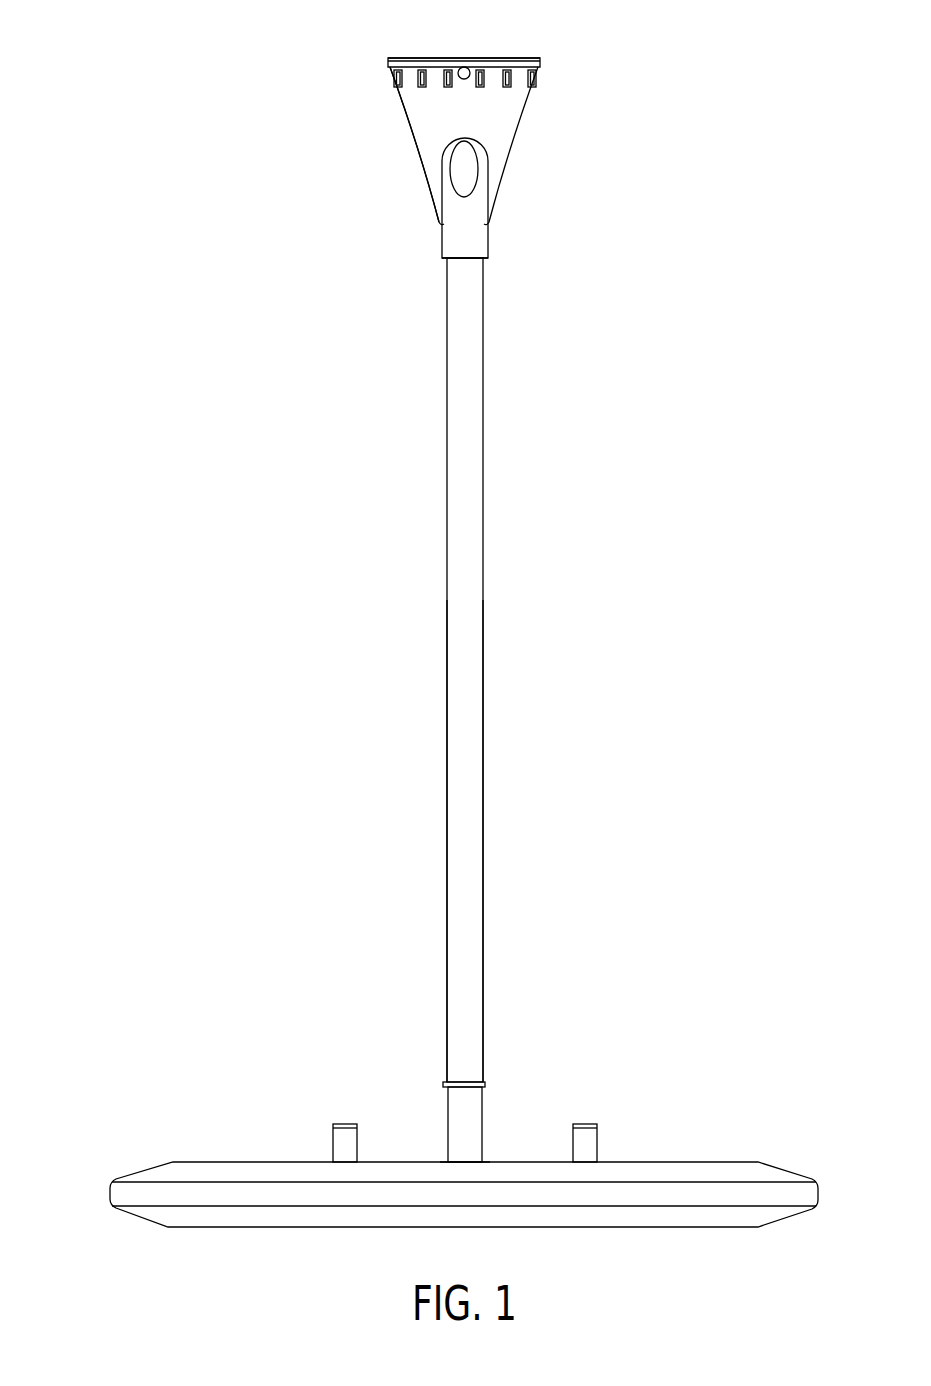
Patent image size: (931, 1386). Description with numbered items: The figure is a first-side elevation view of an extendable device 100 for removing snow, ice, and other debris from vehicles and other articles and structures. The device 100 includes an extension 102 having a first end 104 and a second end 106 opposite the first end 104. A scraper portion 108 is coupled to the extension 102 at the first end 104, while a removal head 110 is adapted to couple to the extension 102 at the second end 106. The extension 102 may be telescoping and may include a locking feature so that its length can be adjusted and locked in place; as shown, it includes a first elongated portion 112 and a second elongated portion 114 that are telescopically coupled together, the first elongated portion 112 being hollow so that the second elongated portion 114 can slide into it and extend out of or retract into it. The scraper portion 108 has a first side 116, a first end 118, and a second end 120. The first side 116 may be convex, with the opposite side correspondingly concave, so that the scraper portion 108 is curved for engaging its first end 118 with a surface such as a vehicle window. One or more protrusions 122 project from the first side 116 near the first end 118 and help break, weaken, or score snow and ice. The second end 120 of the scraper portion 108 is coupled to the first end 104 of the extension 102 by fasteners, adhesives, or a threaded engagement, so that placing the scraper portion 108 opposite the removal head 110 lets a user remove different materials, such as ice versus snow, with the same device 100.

The extendable device 100 is at (302, 506).
The extension 102 is at (513, 641).
The first end 104 is at (483, 258).
The second end 106 is at (483, 1162).
The scraper portion 108 is at (525, 125).
The removal head 110 is at (98, 1162).
The first elongated portion 112 is at (471, 770).
The second elongated portion 114 is at (458, 1114).
The first side 116 is at (423, 121).
The first end 118 is at (456, 57).
The second end 120 is at (440, 250).
The protrusions 122 is at (533, 77).